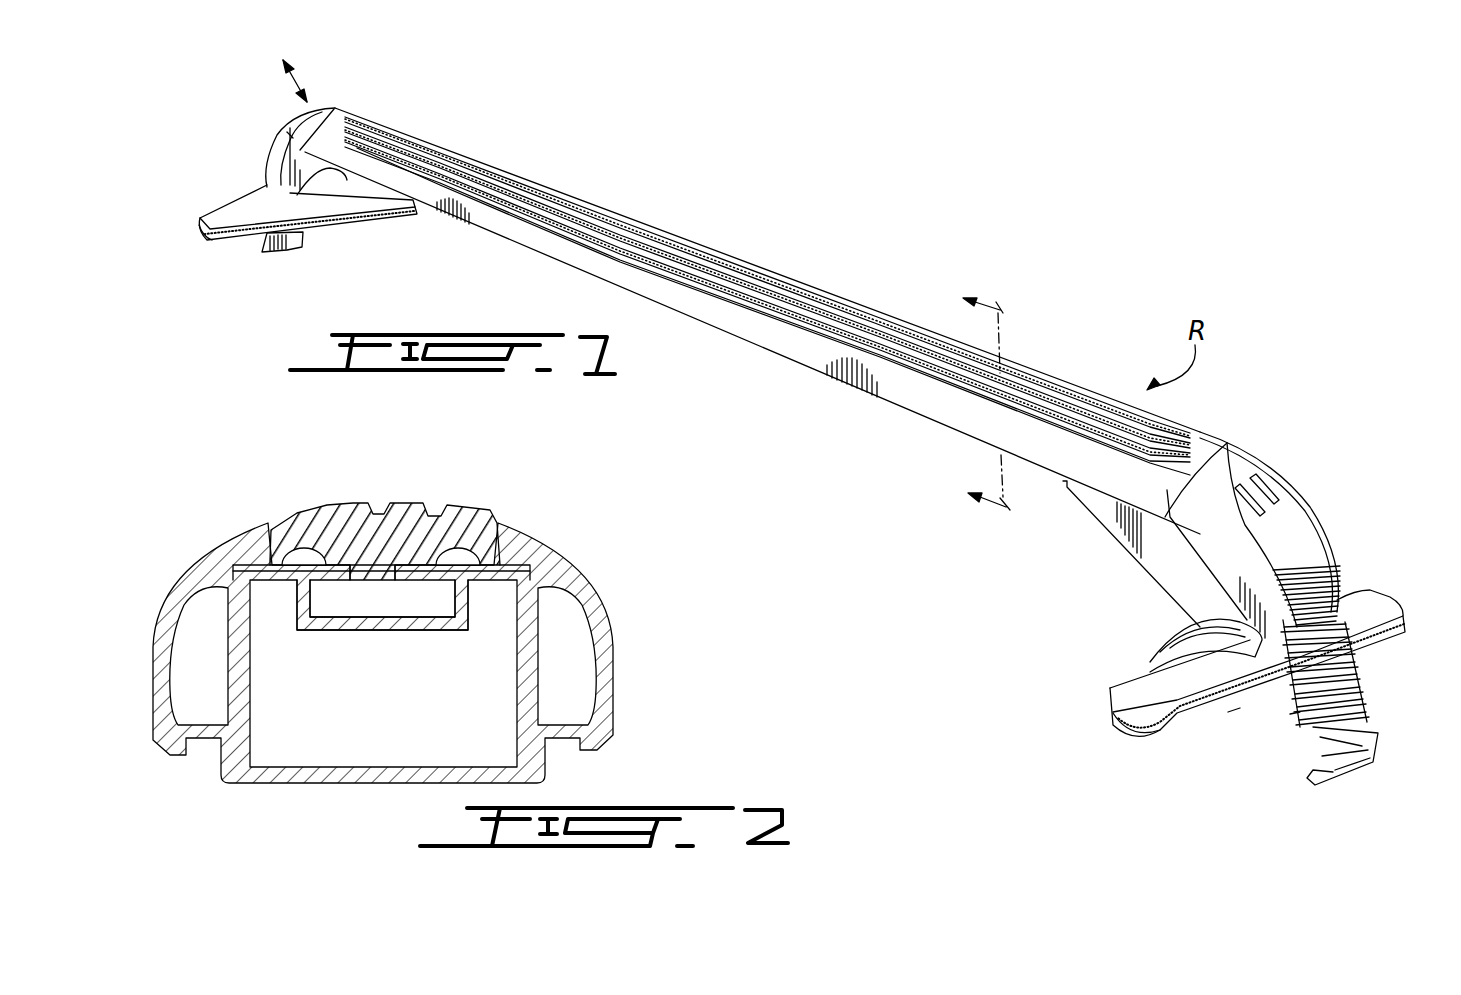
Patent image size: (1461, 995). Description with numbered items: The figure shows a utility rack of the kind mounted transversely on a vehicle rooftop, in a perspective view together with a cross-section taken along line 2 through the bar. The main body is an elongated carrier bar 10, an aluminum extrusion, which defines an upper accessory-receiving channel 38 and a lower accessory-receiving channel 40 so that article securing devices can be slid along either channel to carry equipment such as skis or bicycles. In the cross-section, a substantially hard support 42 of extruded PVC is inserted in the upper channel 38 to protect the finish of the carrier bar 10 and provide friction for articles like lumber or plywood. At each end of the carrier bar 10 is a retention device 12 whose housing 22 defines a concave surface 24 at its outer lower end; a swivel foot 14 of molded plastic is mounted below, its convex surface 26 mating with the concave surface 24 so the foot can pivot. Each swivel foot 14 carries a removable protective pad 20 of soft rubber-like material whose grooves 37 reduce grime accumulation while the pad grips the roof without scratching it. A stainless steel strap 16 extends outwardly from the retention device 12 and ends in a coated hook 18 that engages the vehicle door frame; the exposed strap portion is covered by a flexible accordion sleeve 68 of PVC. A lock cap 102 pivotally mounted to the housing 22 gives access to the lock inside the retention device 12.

In FIG. 1, the carrier bar 10 is at (755, 346).
In FIG. 2, the carrier bar 10 is at (183, 570).
In FIG. 1, the utility rack retention device 12 is at (267, 155).
In FIG. 1, the swivel foot 14 is at (213, 203).
In FIG. 1, the strap 16 is at (1293, 718).
In FIG. 1, the hook 18 is at (270, 250).
In FIG. 1, the protective pad 20 is at (390, 215).
In FIG. 1, the housing 22 is at (303, 163).
In FIG. 1, the concave surface 24 is at (1233, 642).
In FIG. 1, the convex surface 26 is at (1233, 715).
In FIG. 1, the grooves 37 is at (200, 240).
In FIG. 2, the upper accessory-receiving channel 38 is at (503, 547).
In FIG. 2, the lower accessory-receiving channel 40 is at (358, 600).
In FIG. 1, the hard support 42 is at (707, 265).
In FIG. 2, the hard support 42 is at (447, 518).
In FIG. 1, the flexible accordion sleeve 68 is at (1343, 657).
In FIG. 1, the lock cap 102 is at (287, 135).
In FIG. 1, the line 2- 2 is at (995, 415).